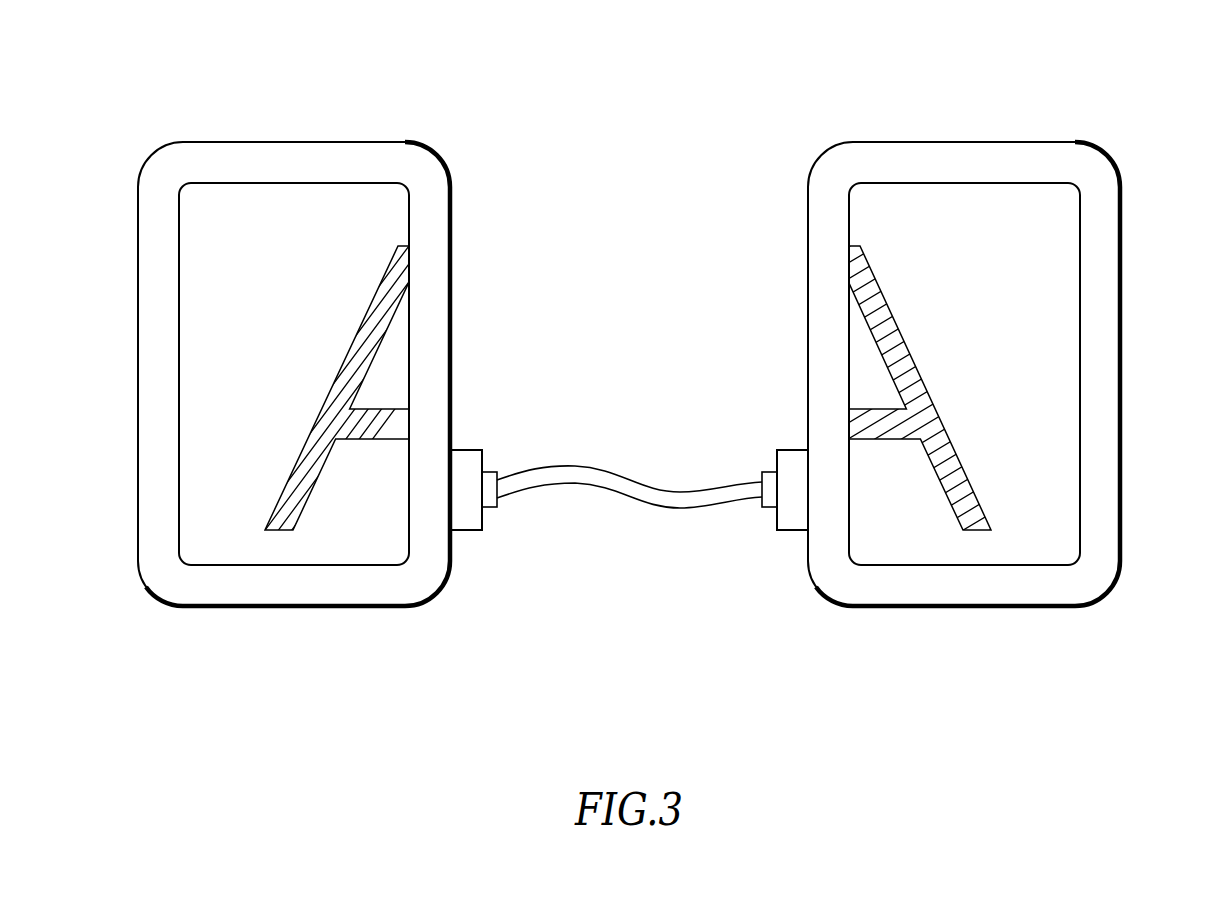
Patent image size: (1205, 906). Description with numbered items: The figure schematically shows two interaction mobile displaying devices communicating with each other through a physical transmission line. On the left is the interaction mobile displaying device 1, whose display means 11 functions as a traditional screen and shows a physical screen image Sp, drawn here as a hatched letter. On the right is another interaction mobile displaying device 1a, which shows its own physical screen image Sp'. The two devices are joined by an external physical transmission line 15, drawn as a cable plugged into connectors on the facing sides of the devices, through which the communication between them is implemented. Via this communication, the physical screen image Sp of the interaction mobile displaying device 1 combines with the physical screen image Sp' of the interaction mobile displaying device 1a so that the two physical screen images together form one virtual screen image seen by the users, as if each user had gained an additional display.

The interaction mobile displaying device 1 is at (265, 323).
The interaction mobile displaying device 1a is at (1006, 332).
The display means 11 is at (162, 367).
The physical screen image Sp is at (250, 394).
The physical screen image Sp' is at (1022, 388).
The external physical transmission line 15 is at (601, 479).